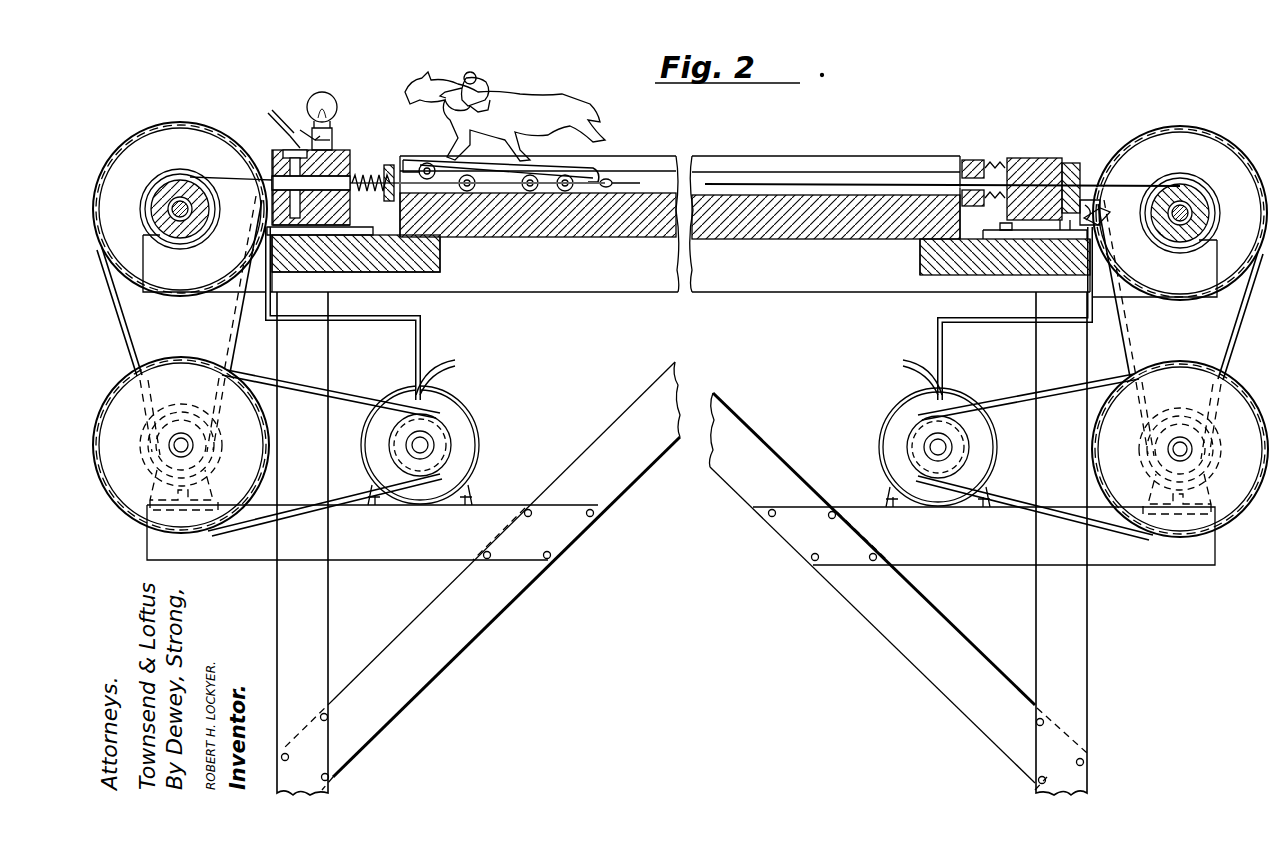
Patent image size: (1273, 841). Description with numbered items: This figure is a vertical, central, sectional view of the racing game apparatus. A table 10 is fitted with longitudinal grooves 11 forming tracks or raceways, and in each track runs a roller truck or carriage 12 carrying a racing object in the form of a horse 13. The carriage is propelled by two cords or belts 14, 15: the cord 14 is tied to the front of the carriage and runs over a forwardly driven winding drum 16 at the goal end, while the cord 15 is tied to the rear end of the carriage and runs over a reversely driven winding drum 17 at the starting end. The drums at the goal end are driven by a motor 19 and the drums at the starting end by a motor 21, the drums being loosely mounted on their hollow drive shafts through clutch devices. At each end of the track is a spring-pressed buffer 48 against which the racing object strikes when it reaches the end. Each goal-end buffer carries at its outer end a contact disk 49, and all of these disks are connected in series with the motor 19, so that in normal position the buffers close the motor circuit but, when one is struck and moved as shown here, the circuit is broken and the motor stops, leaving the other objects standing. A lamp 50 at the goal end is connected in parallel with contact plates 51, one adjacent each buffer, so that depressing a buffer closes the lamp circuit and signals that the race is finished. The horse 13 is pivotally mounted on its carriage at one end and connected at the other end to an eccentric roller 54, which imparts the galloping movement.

The table 10 is at (681, 224).
The longitudinal groove 11 is at (805, 173).
The roller truck or carriage 12 is at (503, 185).
The horse 13 is at (535, 108).
The cord or belt 14 is at (262, 174).
The cord or belt 15 is at (895, 185).
The forwardly driven winding drum 16 is at (190, 228).
The reversely driven winding drum 17 is at (1170, 236).
The motor 19 is at (462, 420).
The motor 21 is at (890, 432).
The spring-pressed buffer 48 is at (386, 165).
The contact disk 49 is at (275, 162).
The lamp 50 is at (332, 100).
The contact plate 51 is at (296, 145).
The roller 54 is at (447, 176).